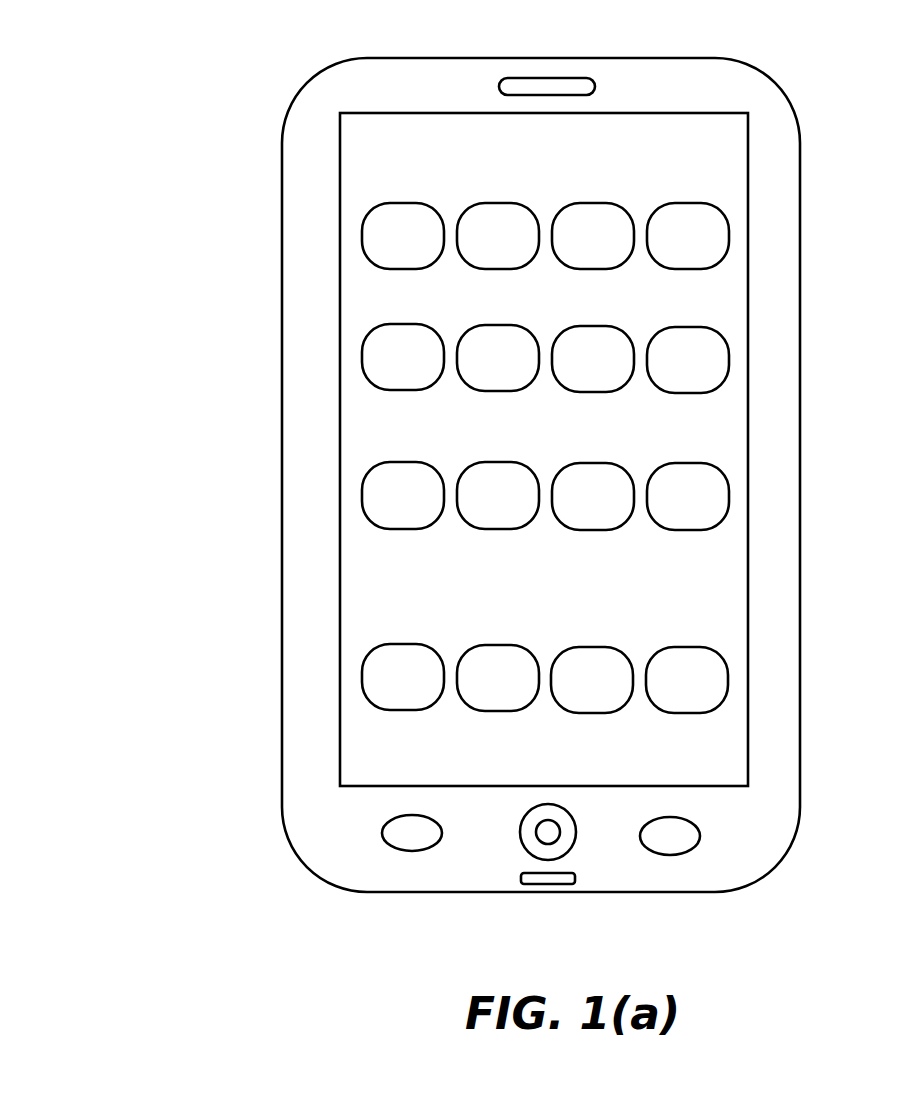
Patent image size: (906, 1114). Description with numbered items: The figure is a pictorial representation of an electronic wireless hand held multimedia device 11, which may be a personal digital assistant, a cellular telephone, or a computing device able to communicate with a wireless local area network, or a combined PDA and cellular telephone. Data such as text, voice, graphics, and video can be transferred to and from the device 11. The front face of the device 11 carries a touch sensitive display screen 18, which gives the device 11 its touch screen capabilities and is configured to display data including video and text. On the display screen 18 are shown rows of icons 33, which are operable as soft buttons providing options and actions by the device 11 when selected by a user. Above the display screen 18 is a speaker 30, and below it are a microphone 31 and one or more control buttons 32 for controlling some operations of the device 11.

The electronic wireless hand held multimedia device 11 is at (138, 129).
The touch sensitive display screen 18 is at (338, 165).
The speaker 30 is at (540, 78).
The microphone 31 is at (560, 885).
The control button 32 is at (365, 838).
The icons 33 is at (348, 357).